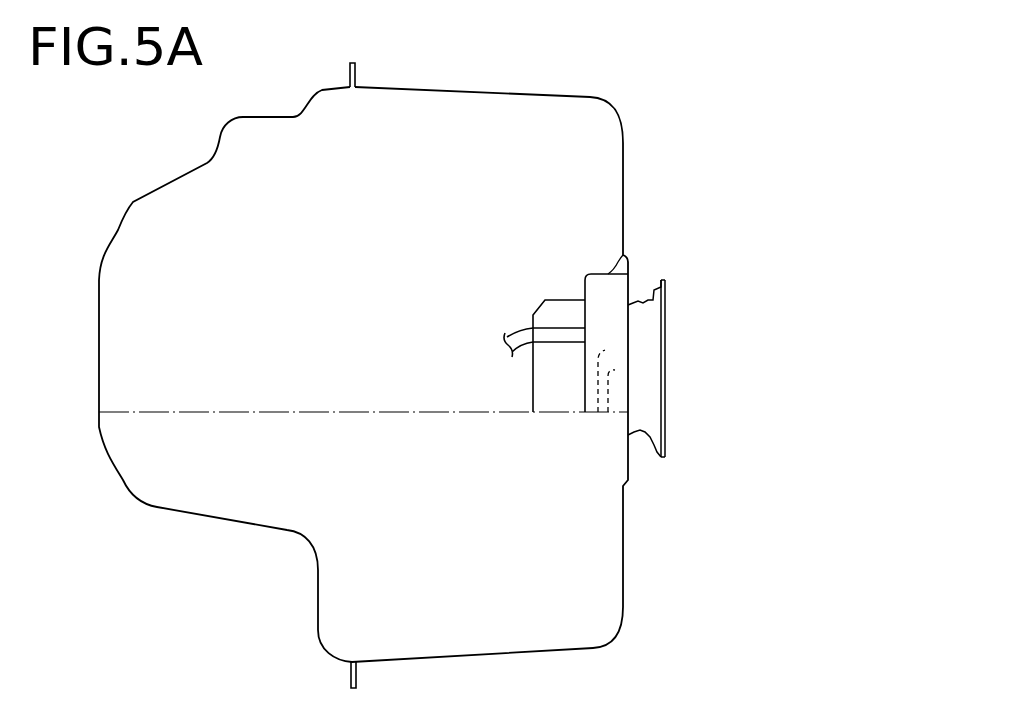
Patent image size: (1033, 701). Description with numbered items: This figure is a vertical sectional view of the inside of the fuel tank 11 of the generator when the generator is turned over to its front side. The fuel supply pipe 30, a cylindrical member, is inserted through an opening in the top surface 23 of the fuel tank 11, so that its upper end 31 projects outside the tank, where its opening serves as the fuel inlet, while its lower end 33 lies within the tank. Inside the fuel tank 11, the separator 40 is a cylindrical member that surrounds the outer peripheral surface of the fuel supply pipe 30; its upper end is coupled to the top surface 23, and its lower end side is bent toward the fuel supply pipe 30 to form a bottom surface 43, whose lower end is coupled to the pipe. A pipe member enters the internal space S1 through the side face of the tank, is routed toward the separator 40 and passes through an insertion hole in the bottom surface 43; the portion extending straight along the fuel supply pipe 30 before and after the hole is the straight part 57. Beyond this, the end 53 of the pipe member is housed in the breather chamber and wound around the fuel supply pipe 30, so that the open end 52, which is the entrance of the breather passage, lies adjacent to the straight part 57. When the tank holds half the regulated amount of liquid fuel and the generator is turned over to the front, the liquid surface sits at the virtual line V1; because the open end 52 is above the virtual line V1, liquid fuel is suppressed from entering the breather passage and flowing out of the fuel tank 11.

The fuel tank 11 is at (405, 350).
The top surface 23 is at (625, 143).
The internal space S1 is at (582, 207).
The bottom surface 43 is at (587, 272).
The separator 40 is at (630, 291).
The fuel supply pipe 30 is at (643, 300).
The upper end 31 is at (662, 280).
The straight part 57 is at (560, 328).
The lower end 33 is at (535, 300).
The open end 52 is at (605, 350).
The end 53 is at (615, 370).
The virtual line V1 is at (620, 410).